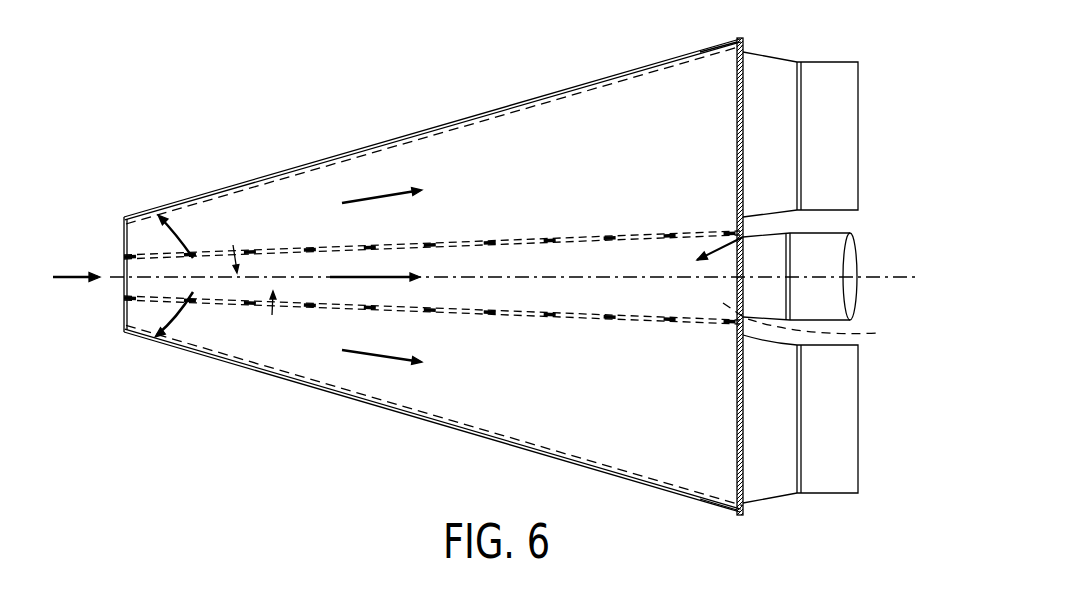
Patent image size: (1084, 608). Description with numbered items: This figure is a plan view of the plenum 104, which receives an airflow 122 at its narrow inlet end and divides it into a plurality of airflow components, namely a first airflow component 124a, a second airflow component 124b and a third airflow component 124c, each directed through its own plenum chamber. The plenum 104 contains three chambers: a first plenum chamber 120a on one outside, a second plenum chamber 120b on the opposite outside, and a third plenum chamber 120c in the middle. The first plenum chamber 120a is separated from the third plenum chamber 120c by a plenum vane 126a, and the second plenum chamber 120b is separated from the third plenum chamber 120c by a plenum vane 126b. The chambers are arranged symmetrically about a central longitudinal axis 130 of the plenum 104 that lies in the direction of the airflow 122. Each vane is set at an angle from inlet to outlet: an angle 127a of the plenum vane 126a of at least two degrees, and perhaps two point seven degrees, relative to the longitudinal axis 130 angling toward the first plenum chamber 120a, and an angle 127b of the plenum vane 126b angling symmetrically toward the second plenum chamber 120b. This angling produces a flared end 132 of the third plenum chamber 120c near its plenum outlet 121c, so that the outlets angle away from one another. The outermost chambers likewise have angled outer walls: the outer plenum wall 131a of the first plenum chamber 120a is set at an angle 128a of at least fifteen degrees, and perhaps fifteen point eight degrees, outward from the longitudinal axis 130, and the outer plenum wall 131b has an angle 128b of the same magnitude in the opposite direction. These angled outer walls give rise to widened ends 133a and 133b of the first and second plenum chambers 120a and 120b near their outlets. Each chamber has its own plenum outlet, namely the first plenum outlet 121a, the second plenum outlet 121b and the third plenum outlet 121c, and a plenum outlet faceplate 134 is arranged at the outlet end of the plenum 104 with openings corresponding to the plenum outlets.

The plenum 104 is at (320, 82).
The airflow 122 is at (68, 277).
The angle of outer plenum wall 128a is at (190, 260).
The angle of outer plenum wall 128b is at (190, 292).
The angle of plenum vane 127a is at (273, 248).
The angle of plenum vane 127b is at (235, 315).
The first airflow component 124a is at (373, 198).
The second airflow component 124b is at (358, 355).
The third airflow component 124c is at (377, 275).
The outer plenum wall 131a is at (625, 76).
The outer plenum wall 131b is at (490, 441).
The widened end 133a is at (718, 127).
The widened end 133b is at (718, 448).
The first plenum chamber 120a is at (698, 154).
The second plenum chamber 120b is at (698, 422).
The third plenum chamber 120c is at (743, 237).
The plenum vane 126a is at (655, 233).
The plenum vane 126b is at (650, 322).
The first plenum outlet 121a is at (845, 137).
The second plenum outlet 121b is at (848, 430).
The third plenum outlet 121c is at (855, 240).
The longitudinal axis 130 is at (870, 277).
The flared end 132 is at (821, 326).
The plenum outlet faceplate 134 is at (745, 505).